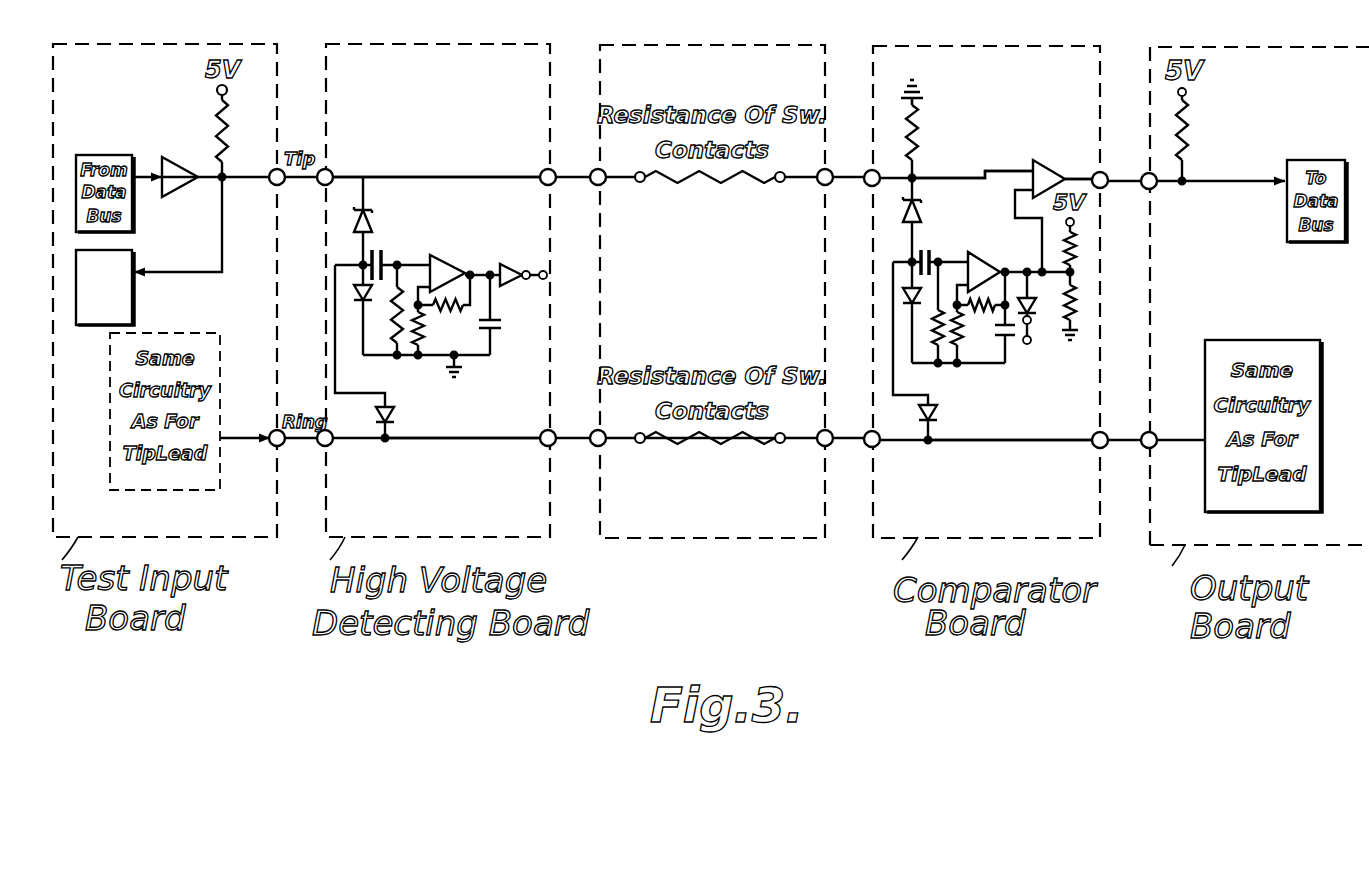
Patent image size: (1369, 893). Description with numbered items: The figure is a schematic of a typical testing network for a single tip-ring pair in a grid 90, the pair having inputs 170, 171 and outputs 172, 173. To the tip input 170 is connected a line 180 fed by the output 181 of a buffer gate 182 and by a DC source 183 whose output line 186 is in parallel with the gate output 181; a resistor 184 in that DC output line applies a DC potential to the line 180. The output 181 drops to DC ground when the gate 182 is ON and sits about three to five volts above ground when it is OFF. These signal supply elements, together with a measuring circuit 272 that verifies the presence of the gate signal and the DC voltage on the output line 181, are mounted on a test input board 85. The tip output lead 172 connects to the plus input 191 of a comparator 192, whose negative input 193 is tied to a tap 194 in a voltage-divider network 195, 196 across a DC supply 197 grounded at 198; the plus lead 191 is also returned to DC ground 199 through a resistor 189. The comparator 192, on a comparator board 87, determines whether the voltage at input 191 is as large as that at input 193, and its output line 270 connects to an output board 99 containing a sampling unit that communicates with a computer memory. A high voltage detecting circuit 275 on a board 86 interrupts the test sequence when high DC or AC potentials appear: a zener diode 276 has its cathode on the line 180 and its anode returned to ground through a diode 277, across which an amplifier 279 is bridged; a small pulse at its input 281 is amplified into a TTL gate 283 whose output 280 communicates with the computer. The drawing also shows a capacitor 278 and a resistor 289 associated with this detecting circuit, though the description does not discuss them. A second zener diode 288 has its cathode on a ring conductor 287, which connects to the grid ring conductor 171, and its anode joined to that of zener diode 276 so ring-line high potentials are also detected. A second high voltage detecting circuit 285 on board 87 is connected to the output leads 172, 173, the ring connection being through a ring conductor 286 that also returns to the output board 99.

The test input board 85 is at (122, 44).
The high voltage detecting board 86 is at (482, 44).
The grid 90 is at (688, 45).
The comparator board 87 is at (970, 46).
The output board 99 is at (1262, 47).
The buffer gate 182 is at (188, 163).
The DC source 183 is at (247, 92).
The resistor 184 is at (248, 138).
The output line 186 is at (247, 165).
The output 181 is at (178, 227).
The measuring circuit 272 is at (132, 305).
The line 180 is at (483, 176).
The zener diode 276 is at (373, 226).
The capacitor 278 is at (364, 255).
The diode 277 is at (356, 294).
The input 281 is at (406, 291).
The amplifier 279 is at (449, 296).
The high voltage detecting circuit 275 is at (424, 256).
The TTL gate 283 is at (520, 256).
The output 280 is at (574, 277).
The resistor 289 is at (397, 322).
The zener diode 288 is at (393, 413).
The ring conductor 287 is at (467, 438).
The input 170 is at (617, 185).
The output 172 is at (800, 186).
The input 171 is at (617, 446).
The output 173 is at (786, 445).
The DC ground 199 is at (920, 92).
The resistor 189 is at (918, 142).
The plus input 191 is at (962, 167).
The comparator 192 is at (1047, 162).
The output line 270 is at (1076, 177).
The DC supply 197 is at (1075, 222).
The voltage-divider network 195 is at (1076, 258).
The tap 194 is at (1076, 272).
The voltage-divider network 196 is at (1076, 300).
The ground 198 is at (1082, 331).
The second high voltage detecting circuit 285 is at (960, 249).
The negative input 193 is at (1040, 262).
The ring conductor 286 is at (1050, 428).